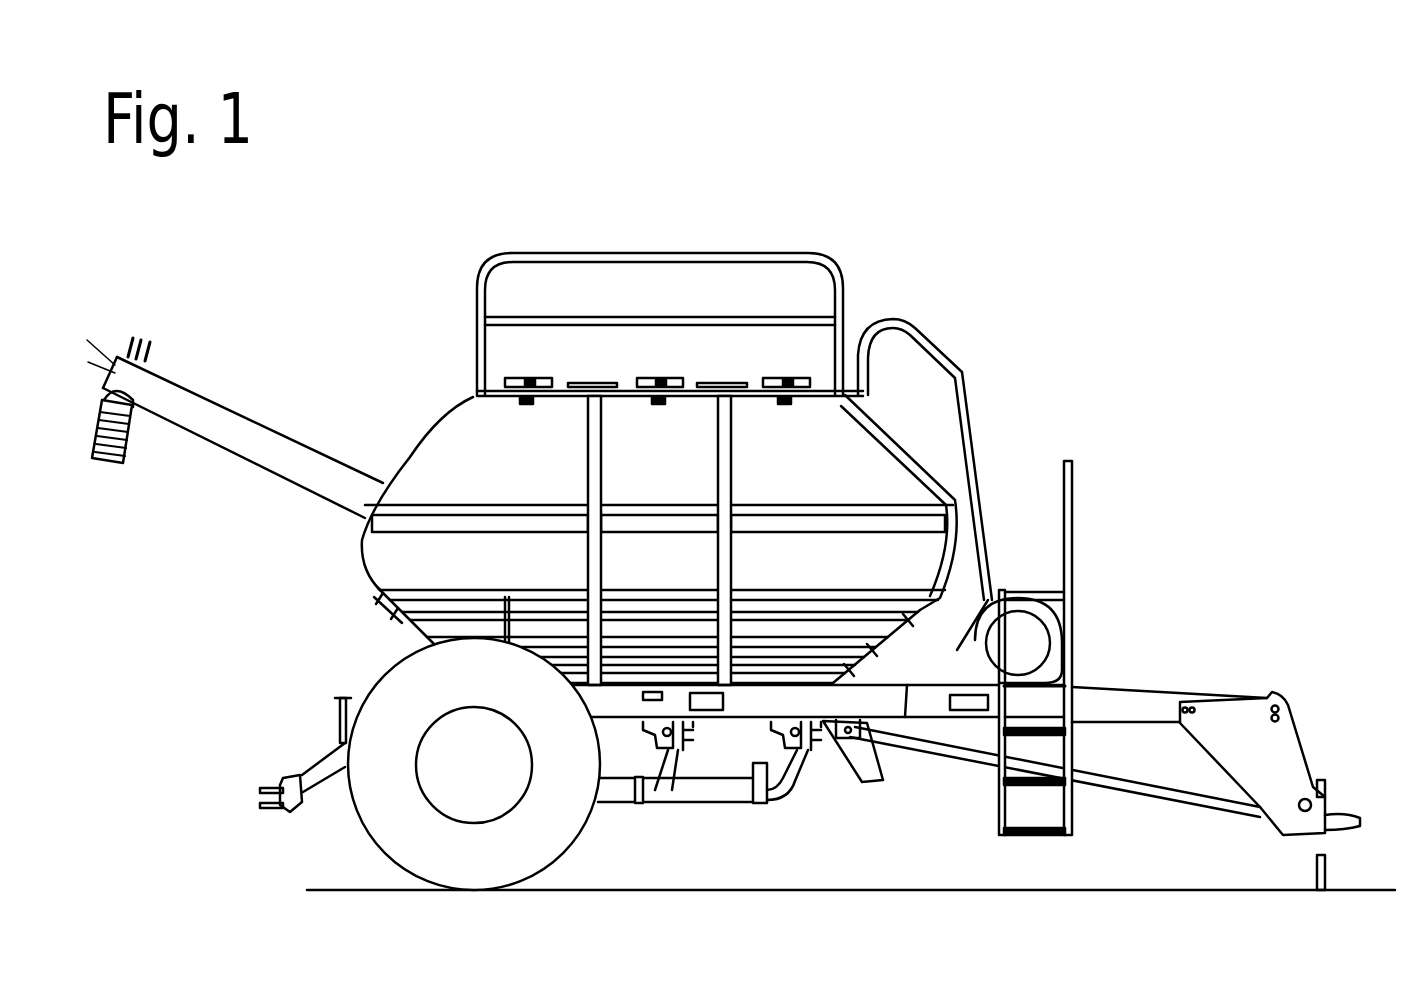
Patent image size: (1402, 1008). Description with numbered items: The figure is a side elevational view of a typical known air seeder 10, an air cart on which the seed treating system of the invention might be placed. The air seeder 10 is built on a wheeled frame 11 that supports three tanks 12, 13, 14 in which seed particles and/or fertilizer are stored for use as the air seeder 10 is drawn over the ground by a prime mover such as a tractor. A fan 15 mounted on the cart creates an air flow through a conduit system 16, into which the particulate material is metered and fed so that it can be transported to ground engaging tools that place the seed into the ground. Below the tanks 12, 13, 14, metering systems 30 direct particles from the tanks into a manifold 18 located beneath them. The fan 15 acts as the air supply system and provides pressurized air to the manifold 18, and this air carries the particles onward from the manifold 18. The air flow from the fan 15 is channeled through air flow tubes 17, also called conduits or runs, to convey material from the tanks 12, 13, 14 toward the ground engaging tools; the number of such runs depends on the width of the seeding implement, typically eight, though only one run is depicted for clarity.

The air seeder 10 is at (1216, 306).
The wheeled frame 11 is at (1163, 692).
The tank 12 is at (483, 473).
The tank 13 is at (677, 440).
The tank 14 is at (877, 470).
The fan 15 is at (1048, 628).
The conduit system 16 is at (637, 763).
The air flow tubes 17 is at (790, 803).
The manifold 18 is at (733, 803).
The metering systems 30 is at (697, 753).